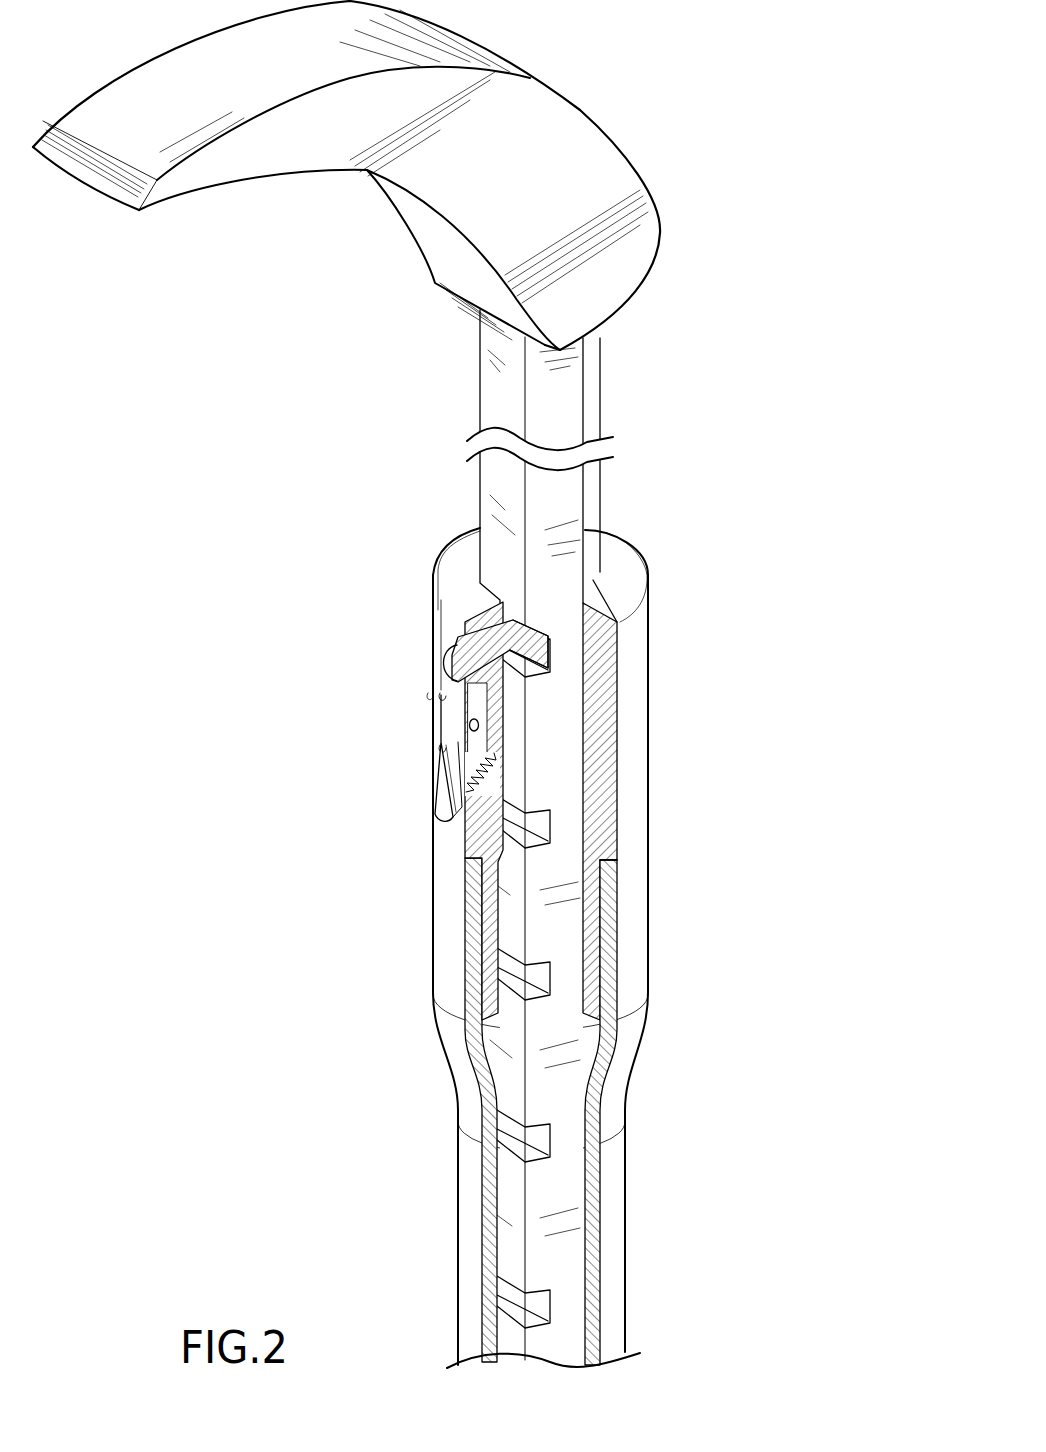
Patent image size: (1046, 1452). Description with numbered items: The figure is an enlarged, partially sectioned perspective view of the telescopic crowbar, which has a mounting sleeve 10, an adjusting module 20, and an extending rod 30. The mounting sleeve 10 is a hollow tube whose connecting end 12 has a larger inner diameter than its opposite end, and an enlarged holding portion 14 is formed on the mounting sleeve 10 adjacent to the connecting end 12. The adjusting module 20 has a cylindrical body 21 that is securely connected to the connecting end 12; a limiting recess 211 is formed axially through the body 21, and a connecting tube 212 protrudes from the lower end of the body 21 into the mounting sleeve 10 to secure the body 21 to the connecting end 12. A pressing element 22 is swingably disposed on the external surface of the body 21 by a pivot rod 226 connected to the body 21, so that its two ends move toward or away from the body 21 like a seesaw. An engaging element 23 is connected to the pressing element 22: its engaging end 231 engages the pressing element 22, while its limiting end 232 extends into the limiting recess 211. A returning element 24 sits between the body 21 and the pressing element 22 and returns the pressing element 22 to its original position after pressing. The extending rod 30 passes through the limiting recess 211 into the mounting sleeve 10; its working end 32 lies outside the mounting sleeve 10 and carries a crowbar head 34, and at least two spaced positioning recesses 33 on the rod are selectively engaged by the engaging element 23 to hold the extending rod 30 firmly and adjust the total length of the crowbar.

The mounting sleeve 10 is at (457, 1246).
The connecting end 12 is at (604, 863).
The holding portion 14 is at (465, 1078).
The adjusting module 20 is at (333, 741).
The body 21 is at (656, 766).
The limiting recess 211 is at (593, 580).
The connecting tube 212 is at (596, 944).
The pressing element 22 is at (431, 789).
The pivot rod 226 is at (479, 726).
The engaging element 23 is at (440, 654).
The engaging end 231 is at (450, 678).
The limiting end 232 is at (512, 640).
The returning element 24 is at (494, 773).
The extending rod 30 is at (676, 207).
The working end 32 is at (583, 340).
The positioning recesses 33 is at (543, 1137).
The crowbar head 34 is at (557, 118).